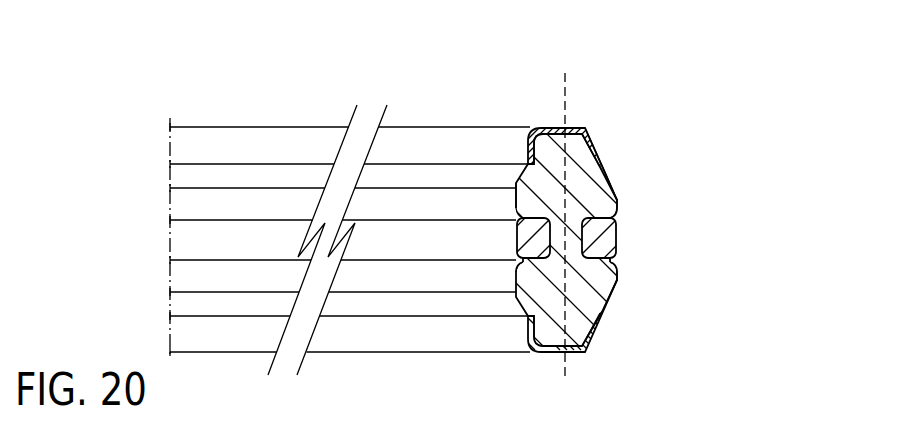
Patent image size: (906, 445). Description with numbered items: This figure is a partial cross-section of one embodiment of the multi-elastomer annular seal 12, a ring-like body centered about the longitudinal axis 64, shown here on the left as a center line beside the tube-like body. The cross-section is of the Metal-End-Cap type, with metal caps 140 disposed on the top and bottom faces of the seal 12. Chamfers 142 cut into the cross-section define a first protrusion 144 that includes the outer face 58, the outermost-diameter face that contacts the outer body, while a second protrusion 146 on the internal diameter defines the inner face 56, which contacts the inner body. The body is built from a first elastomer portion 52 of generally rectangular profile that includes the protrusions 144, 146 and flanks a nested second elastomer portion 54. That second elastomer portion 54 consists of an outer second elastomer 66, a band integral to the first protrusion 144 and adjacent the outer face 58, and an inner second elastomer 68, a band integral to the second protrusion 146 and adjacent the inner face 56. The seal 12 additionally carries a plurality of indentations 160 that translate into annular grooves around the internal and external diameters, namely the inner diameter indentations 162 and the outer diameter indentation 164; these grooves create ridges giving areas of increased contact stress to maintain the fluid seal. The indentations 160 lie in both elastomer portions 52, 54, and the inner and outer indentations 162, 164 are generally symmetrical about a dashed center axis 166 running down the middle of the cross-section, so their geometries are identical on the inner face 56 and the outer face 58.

The annular seal 12 is at (687, 128).
The first elastomer portion 52 is at (617, 202).
The second elastomer portion 54 is at (568, 247).
The inner face 56 is at (514, 283).
The outer face 58 is at (618, 280).
The longitudinal axis 64 is at (172, 118).
The outer second elastomer 66 is at (617, 248).
The inner second elastomer 68 is at (516, 238).
The metal caps 140 is at (588, 128).
The chamfers 142 is at (606, 168).
The first protrusion 144 is at (628, 178).
The second protrusion 146 is at (514, 176).
The indentations 160 is at (502, 197).
The inner diameter indentations 162 is at (518, 212).
The outer diameter indentation 164 is at (618, 214).
The central axis 166 is at (565, 80).